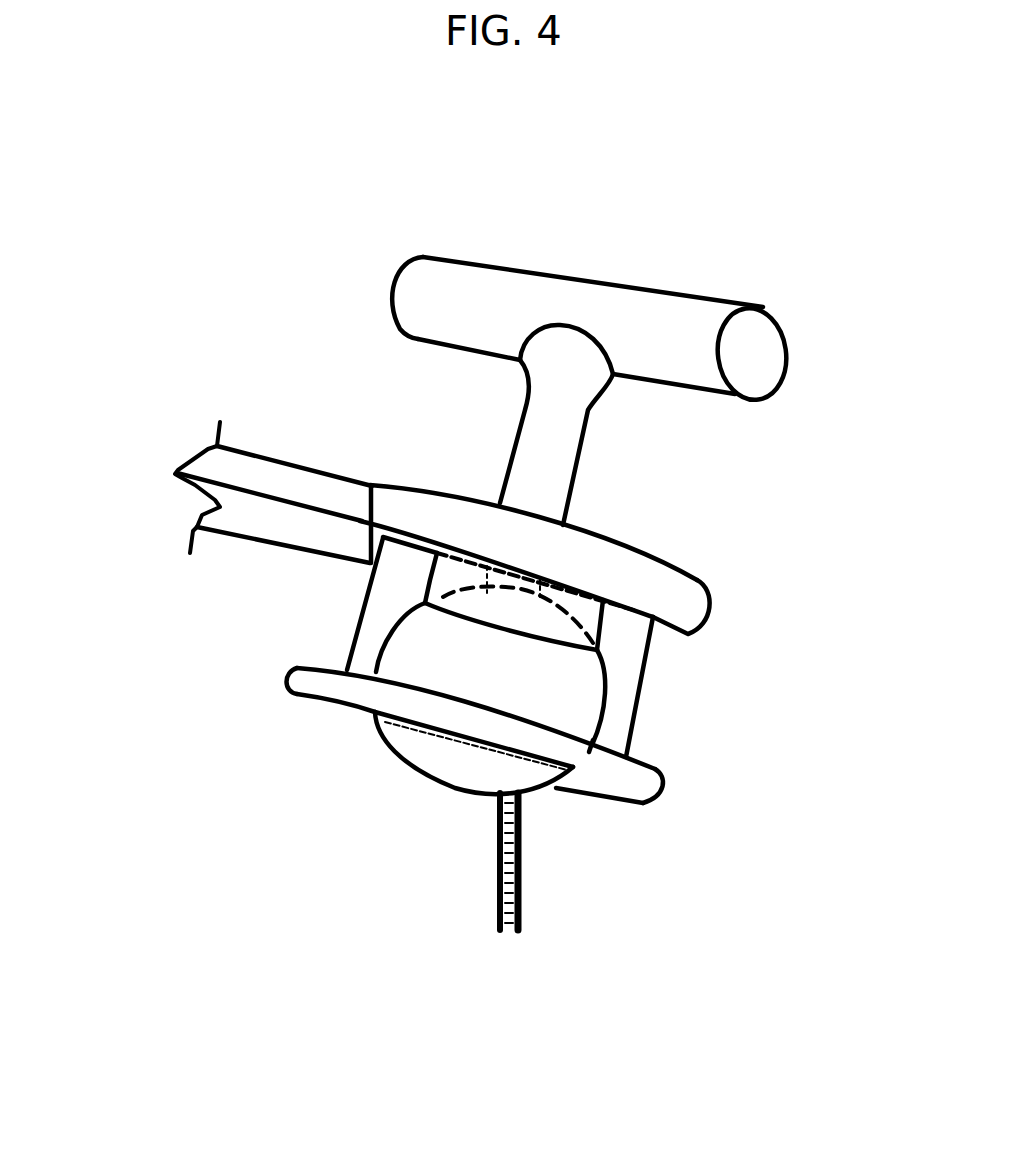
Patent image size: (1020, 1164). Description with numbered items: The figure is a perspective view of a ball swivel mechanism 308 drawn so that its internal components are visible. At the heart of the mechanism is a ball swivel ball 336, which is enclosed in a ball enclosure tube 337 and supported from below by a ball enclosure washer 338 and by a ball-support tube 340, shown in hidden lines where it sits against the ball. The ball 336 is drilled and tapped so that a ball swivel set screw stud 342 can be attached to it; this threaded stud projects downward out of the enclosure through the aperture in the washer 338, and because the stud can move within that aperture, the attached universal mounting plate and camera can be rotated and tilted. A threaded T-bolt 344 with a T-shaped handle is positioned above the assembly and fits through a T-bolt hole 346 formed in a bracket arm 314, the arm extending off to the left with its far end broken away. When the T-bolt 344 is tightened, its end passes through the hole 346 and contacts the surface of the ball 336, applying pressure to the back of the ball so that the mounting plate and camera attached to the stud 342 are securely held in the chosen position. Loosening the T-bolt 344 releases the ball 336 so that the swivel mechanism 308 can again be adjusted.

The ball swivel mechanism 308 is at (268, 975).
The bracket arm 314 is at (285, 478).
The ball swivel ball 336 is at (578, 702).
The ball enclosure tube 337 is at (363, 600).
The ball enclosure washer 338 is at (335, 698).
The ball-support tube 340 is at (580, 603).
The ball swivel set screw stud 342 is at (522, 910).
The threaded T-bolt 344 is at (667, 295).
The T-bolt hole 346 is at (573, 523).